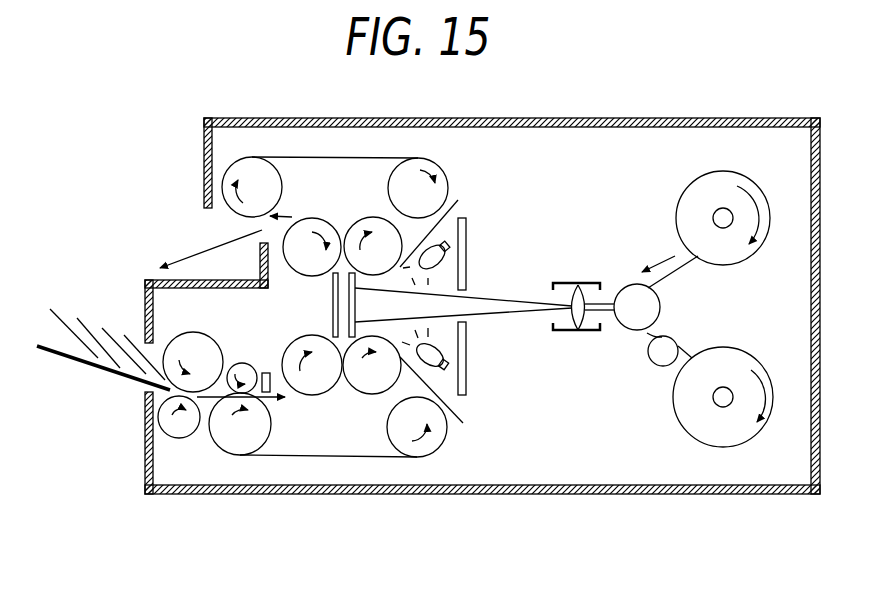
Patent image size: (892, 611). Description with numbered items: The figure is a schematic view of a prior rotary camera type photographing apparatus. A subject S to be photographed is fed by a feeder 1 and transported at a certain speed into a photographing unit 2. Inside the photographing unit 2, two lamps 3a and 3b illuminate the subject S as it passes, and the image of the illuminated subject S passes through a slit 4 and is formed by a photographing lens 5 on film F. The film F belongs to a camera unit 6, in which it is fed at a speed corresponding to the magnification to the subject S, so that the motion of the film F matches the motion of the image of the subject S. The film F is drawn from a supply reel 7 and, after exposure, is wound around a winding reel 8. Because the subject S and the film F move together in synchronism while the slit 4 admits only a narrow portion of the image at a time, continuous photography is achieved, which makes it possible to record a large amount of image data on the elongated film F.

The subject S is at (58, 318).
The feeder 1 is at (128, 330).
The photographing unit 2 is at (330, 302).
The lamp 3a is at (437, 243).
The lamp 3b is at (438, 367).
The slit 4 is at (466, 257).
The photographing lens 5 is at (567, 334).
The camera unit 6 is at (645, 232).
The supply reel 7 is at (740, 183).
The winding reel 8 is at (743, 368).
The film F is at (690, 349).